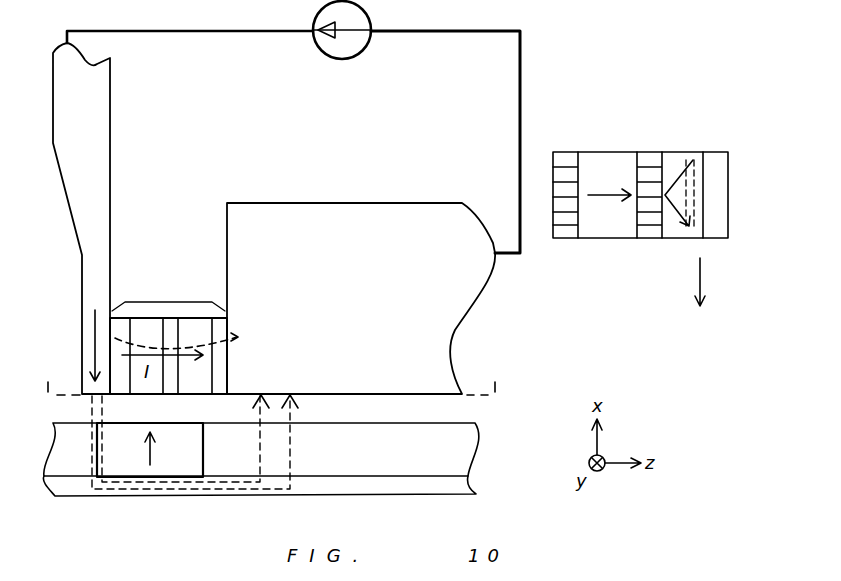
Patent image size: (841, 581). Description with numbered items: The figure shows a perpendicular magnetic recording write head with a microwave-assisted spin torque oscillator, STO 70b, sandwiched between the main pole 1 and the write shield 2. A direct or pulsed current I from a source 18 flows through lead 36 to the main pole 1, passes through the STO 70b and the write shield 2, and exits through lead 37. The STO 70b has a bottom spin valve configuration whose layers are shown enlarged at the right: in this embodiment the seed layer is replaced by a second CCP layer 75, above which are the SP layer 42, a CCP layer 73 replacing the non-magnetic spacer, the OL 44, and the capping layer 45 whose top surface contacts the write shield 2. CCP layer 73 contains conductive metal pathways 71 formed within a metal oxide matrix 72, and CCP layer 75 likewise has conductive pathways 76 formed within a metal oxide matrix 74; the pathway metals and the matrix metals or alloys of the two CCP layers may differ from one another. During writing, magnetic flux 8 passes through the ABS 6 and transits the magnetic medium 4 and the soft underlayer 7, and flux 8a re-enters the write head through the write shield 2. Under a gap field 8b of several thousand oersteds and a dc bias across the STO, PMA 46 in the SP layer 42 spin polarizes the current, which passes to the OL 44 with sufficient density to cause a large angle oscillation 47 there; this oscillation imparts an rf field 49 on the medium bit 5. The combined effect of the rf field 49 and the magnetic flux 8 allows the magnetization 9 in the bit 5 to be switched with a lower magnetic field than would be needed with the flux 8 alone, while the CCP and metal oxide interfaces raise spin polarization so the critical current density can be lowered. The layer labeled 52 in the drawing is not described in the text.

The main pole 1 is at (80, 202).
The write shield 2 is at (445, 325).
The magnetic medium 4 is at (463, 445).
The medium bit 5 is at (177, 466).
The ABS 6 is at (270, 375).
The soft underlayer 7 is at (453, 483).
The magnetic flux 8 is at (95, 336).
The flux 8a is at (261, 411).
The gap field 8b is at (218, 338).
The magnetization 9 is at (148, 448).
The source 18 is at (366, 13).
The lead 36 is at (233, 30).
The lead 37 is at (522, 43).
The SP layer 42 is at (604, 150).
The OL 44 is at (199, 396).
The capping layer 45 is at (221, 396).
The PMA 46 is at (605, 200).
The large angle oscillation 47 is at (692, 230).
The rf field 49 is at (687, 283).
The nonmagnetic layer 52 is at (151, 396).
The STO 70b is at (169, 289).
The conductive metal pathways 71 is at (643, 235).
The metal oxide matrix 72 is at (653, 228).
The CCP layer 73 is at (174, 396).
The metal oxide matrix 74 is at (560, 235).
The CCP layer 75 is at (121, 396).
The conductive pathways 76 is at (571, 228).